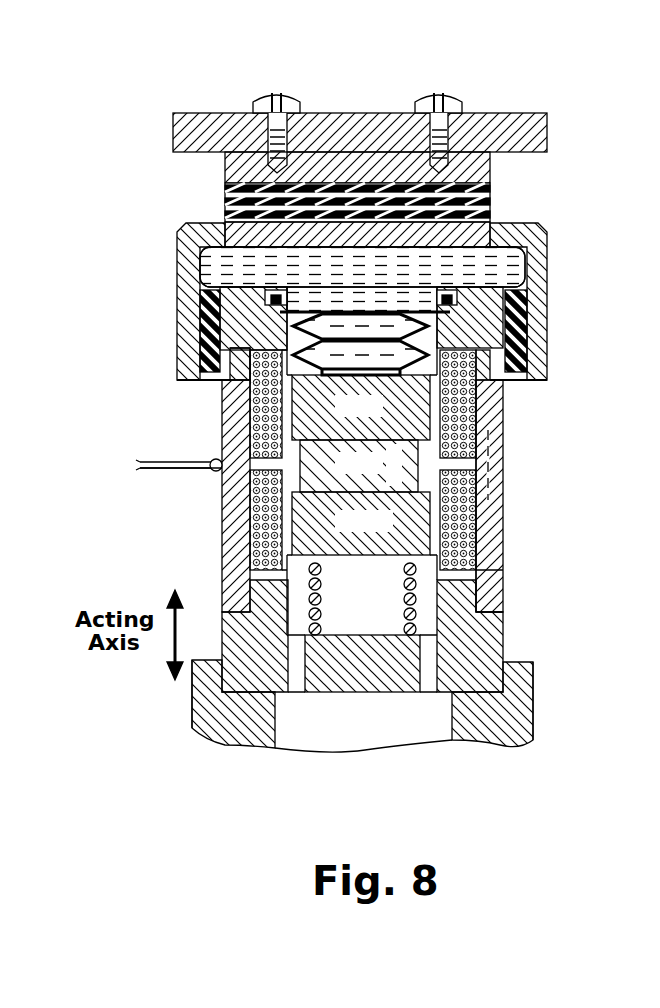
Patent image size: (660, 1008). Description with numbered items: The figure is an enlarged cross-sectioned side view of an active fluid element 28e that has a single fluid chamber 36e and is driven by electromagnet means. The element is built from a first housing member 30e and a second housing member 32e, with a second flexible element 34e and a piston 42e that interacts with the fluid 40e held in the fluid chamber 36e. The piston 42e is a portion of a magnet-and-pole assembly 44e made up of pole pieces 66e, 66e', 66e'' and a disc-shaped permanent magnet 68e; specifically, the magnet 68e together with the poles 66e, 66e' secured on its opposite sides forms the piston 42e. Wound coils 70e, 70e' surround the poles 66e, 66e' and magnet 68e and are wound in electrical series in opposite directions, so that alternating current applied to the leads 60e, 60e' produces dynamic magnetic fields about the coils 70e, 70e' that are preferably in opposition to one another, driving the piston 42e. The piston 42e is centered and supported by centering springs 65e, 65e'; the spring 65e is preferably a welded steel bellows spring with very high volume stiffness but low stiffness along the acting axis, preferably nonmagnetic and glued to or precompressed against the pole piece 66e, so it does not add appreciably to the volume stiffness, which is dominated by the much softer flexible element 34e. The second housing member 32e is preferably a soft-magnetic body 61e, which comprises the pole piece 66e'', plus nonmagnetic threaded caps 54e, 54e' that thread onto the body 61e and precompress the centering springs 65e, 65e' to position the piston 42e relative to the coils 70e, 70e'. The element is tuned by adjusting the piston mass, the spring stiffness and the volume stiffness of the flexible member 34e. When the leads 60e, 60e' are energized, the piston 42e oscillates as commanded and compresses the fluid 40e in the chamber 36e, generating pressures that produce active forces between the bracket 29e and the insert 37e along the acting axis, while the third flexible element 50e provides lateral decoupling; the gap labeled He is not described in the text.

The bracket 29e is at (333, 113).
The third flexible element 50e is at (490, 200).
The first housing member 30e is at (547, 296).
The fluid chamber 36e is at (276, 281).
The fluid 40e is at (177, 250).
The second flexible element 34e is at (200, 340).
The piston 42e is at (355, 362).
The threaded cap 54e is at (429, 357).
The wound coil 70e is at (543, 381).
The centering spring 65e is at (184, 382).
The second housing member 32e is at (505, 441).
The active fluid element 28e is at (505, 489).
The magnet-and-pole assembly 44e is at (222, 552).
The lead 60e is at (137, 446).
The lead 60e' is at (141, 493).
The pole piece 66e is at (361, 407).
The disc-shaped permanent magnet 68e is at (380, 474).
The pole piece 66e' is at (361, 523).
The pole piece 66e'' is at (258, 465).
The gap He is at (490, 512).
The soft-magnetic body 61e is at (500, 530).
The centering spring 65e' is at (463, 599).
The wound coil 70e' is at (547, 585).
The threaded cap 54e' is at (420, 636).
The insert 37e is at (520, 675).